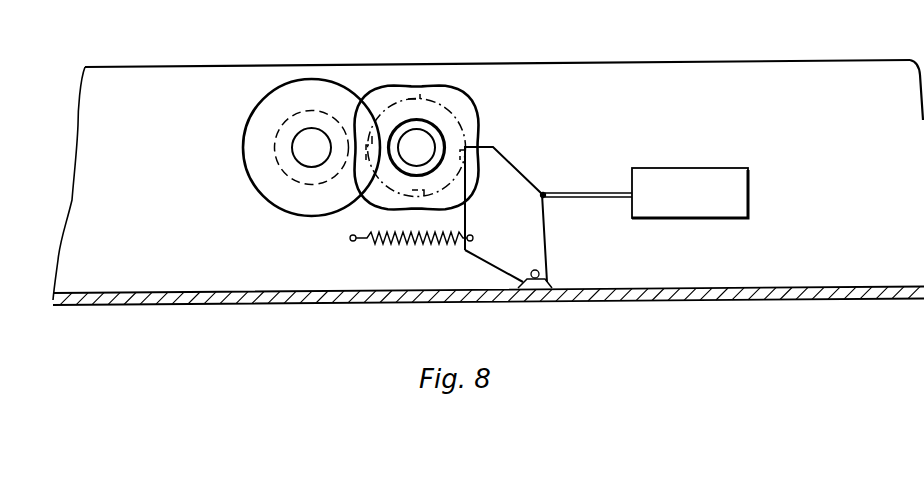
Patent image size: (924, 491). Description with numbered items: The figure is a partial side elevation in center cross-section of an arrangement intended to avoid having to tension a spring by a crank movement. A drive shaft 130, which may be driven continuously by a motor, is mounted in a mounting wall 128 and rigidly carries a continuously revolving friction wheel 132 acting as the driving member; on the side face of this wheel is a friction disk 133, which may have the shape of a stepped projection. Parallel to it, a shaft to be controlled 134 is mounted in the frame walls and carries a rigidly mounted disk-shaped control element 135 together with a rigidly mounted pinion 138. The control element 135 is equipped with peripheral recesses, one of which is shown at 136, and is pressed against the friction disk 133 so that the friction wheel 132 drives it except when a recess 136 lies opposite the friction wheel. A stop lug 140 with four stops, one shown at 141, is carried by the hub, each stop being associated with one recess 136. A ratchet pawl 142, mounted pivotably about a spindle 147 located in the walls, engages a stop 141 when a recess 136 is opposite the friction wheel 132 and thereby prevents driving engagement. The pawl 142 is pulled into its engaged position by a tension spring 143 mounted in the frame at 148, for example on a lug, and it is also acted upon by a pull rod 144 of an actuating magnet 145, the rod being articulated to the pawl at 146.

The mounting wall 128 is at (175, 78).
The drive shaft 130 is at (303, 153).
The friction wheel 132 is at (302, 174).
The friction disk 133 is at (303, 216).
The shaft to be controlled 134 is at (406, 135).
The disk-shaped control element 135 is at (395, 87).
The recess 136 is at (420, 99).
The pinion 138 is at (444, 140).
The stop lug 140 is at (443, 122).
The stop 141 is at (447, 113).
The ratchet pawl 142 is at (518, 185).
The tension spring 143 is at (417, 243).
The pull rod 144 is at (607, 191).
The actuating magnet 145 is at (685, 173).
The articulation point 146 is at (548, 192).
The spindle 147 is at (540, 274).
The spring mounting point 148 is at (352, 242).